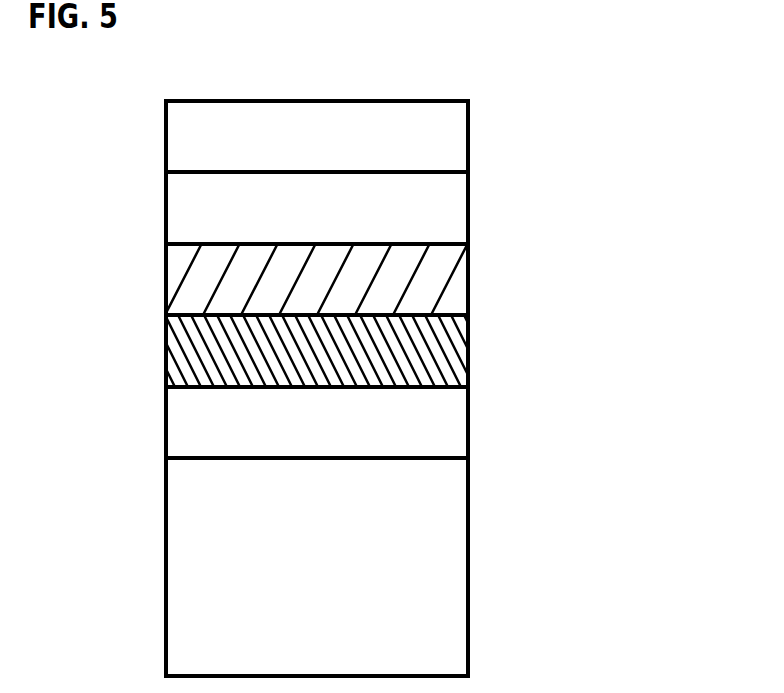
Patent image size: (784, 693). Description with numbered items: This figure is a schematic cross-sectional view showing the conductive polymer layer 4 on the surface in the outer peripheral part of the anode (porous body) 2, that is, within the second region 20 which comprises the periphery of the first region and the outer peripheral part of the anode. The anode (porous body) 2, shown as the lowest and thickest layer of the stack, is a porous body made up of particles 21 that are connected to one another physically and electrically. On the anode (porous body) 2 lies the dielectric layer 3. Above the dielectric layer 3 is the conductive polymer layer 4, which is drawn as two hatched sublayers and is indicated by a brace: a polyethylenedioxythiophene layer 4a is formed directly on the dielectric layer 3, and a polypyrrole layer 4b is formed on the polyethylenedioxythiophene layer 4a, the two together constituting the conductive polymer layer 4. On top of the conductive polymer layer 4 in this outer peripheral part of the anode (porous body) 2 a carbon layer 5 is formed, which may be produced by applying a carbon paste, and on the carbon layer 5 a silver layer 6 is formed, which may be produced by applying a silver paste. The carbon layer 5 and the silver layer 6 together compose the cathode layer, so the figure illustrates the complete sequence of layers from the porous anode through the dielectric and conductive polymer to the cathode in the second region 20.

The second region 20 is at (592, 309).
The silver layer 6 is at (423, 129).
The carbon layer 5 is at (423, 209).
The conductive polymer layer 4 is at (336, 317).
The polypyrrole layer 4b is at (423, 290).
The polyethylenedioxythiophene layer 4a is at (423, 366).
The dielectric layer 3 is at (423, 431).
The anode (porous body) 2 is at (395, 567).
The particles 21 is at (423, 513).